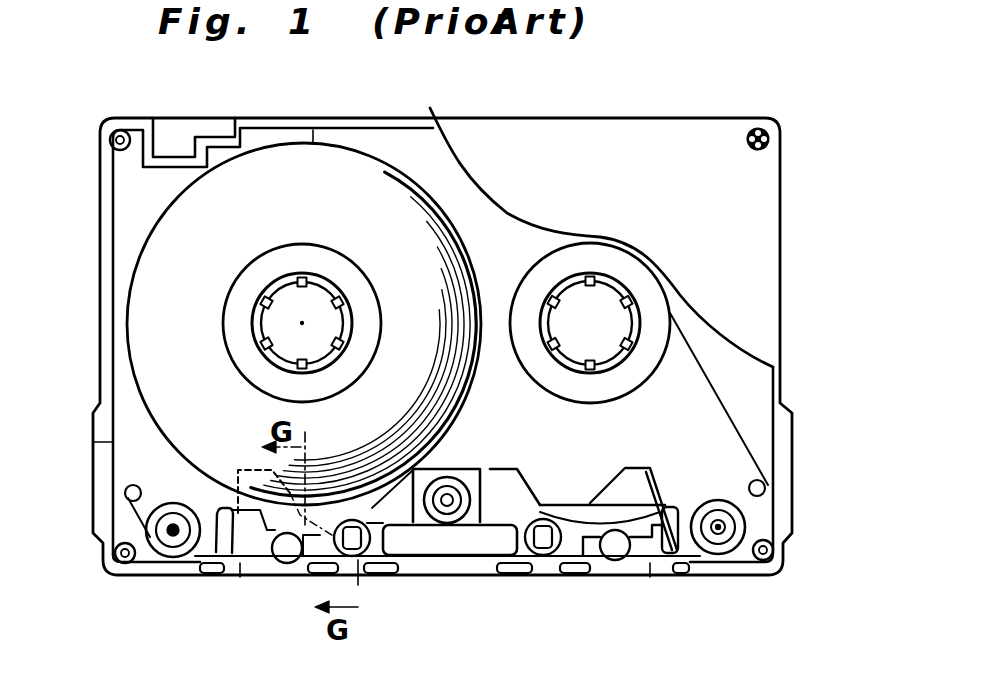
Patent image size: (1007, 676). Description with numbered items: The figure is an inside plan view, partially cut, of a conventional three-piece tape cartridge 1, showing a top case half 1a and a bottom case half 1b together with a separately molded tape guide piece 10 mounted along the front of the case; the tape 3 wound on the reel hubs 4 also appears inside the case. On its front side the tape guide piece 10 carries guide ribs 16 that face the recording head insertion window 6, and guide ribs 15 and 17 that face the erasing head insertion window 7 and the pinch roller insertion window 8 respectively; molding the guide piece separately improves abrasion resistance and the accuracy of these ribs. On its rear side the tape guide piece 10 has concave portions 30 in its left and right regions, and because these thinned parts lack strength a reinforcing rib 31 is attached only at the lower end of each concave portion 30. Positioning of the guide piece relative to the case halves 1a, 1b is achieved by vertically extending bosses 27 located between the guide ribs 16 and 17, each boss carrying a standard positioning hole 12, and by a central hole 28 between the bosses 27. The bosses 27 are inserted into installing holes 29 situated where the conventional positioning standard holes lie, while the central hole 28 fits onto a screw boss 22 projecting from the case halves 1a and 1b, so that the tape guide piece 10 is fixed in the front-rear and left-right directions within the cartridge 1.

The tape cartridge 1 is at (785, 200).
The top case half 1a is at (765, 273).
The bottom case half 1b is at (755, 393).
The magnetic tape 3 is at (122, 446).
The reel hub 4 is at (338, 283).
The recording head insertion window 6 is at (473, 577).
The erasing head insertion window 7 is at (238, 575).
The pinch roller insertion window 8 is at (655, 575).
The tape guide piece 10 is at (510, 490).
The standard positioning hole 12 is at (353, 520).
The guide rib 15 is at (205, 568).
The guide rib 16 is at (437, 560).
The guide rib 17 is at (300, 560).
The screw boss 22 is at (462, 470).
The boss 27 is at (462, 565).
The central hole 28 is at (447, 490).
The installing hole 29 is at (352, 557).
The concave portion 30 is at (323, 493).
The reinforcing rib 31 is at (242, 477).